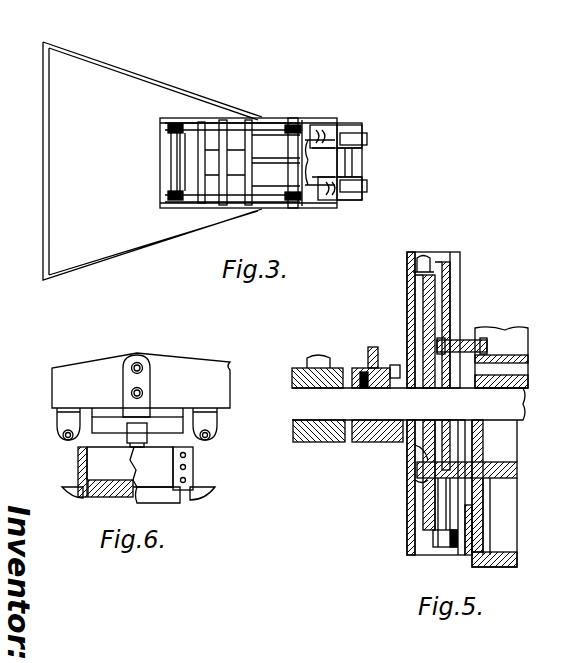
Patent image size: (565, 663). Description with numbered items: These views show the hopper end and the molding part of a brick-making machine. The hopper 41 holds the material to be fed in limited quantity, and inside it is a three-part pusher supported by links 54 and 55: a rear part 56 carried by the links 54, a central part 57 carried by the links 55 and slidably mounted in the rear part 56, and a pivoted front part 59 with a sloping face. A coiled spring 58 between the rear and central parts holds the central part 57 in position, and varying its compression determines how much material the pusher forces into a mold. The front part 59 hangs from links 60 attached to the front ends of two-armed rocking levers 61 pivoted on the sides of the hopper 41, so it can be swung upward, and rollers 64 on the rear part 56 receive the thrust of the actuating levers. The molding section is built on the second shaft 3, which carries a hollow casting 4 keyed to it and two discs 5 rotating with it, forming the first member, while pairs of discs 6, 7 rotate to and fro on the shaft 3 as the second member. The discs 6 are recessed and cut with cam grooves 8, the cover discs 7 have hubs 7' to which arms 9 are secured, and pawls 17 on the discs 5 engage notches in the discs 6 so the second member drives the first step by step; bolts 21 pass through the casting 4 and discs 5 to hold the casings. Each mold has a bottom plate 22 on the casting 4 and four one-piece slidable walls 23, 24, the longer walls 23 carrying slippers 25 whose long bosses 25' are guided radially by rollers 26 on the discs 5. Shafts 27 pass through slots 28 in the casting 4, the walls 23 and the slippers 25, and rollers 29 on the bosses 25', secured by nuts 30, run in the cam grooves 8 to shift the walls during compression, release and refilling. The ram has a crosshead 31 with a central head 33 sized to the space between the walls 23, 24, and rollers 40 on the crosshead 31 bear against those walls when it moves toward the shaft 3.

In FIG. 3, the hopper 41 is at (52, 178).
In FIG. 3, the two-armed rocking levers 61 is at (168, 127).
In FIG. 3, the links 60 is at (171, 135).
In FIG. 3, the front part of pusher 59 is at (212, 121).
In FIG. 3, the central part of pusher 57 is at (284, 180).
In FIG. 3, the links 55 is at (262, 121).
In FIG. 3, the coiled spring 58 is at (305, 140).
In FIG. 3, the rear part of pusher 56 is at (362, 172).
In FIG. 3, the links 54 is at (362, 131).
In FIG. 3, the rollers 64 is at (367, 140).
In FIG. 6, the crosshead 31 is at (95, 370).
In FIG. 6, the head 33 is at (157, 425).
In FIG. 6, the rollers 40 is at (130, 422).
In FIG. 6, the slidable walls 23 is at (80, 463).
In FIG. 6, the slidable walls 24 is at (130, 467).
In FIG. 6, the plates 22 is at (92, 492).
In FIG. 6, the hollow casting 4 is at (170, 500).
In FIG. 5, the hollow casting 4 is at (524, 381).
In FIG. 5, the second shaft 3 is at (408, 404).
In FIG. 5, the arms 9 is at (373, 362).
In FIG. 5, the hubs 7' is at (355, 367).
In FIG. 5, the pawls 17 is at (432, 258).
In FIG. 5, the discs 5 is at (447, 282).
In FIG. 5, the cam grooves 8 is at (430, 300).
In FIG. 5, the bolts 21 is at (465, 345).
In FIG. 5, the discs 7 is at (422, 487).
In FIG. 5, the slippers 25 is at (413, 475).
In FIG. 5, the bosses or hubs 25' is at (411, 504).
In FIG. 5, the rollers 29 is at (425, 487).
In FIG. 5, the nuts 30 is at (417, 463).
In FIG. 5, the shafts 27 is at (492, 480).
In FIG. 5, the slots 28 is at (480, 512).
In FIG. 5, the discs 6 is at (436, 540).
In FIG. 5, the rollers 26 is at (453, 548).